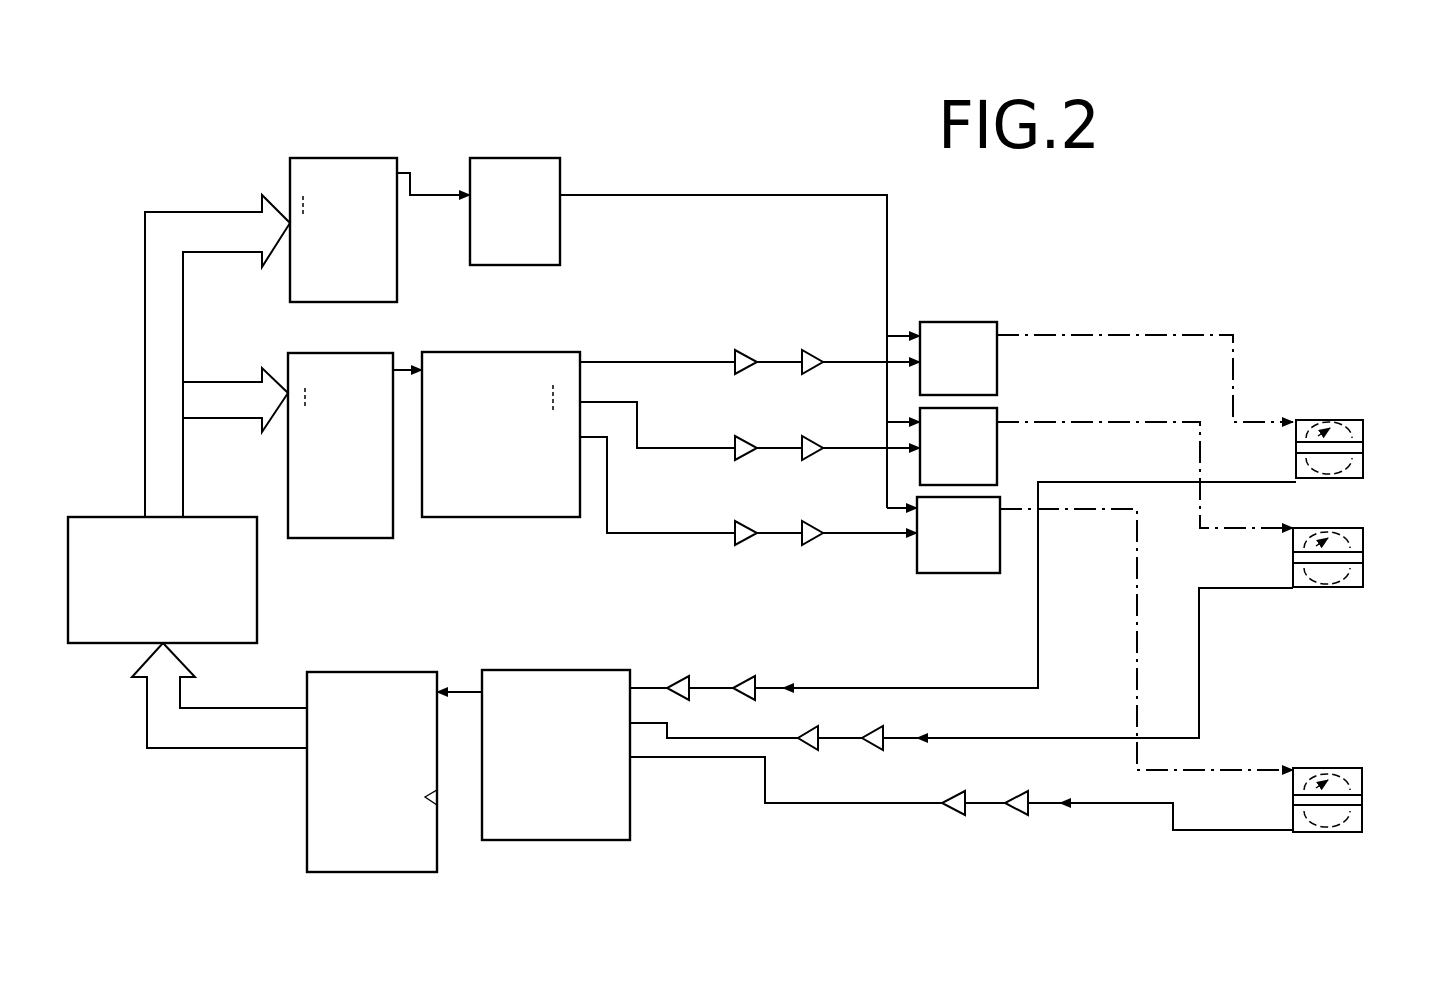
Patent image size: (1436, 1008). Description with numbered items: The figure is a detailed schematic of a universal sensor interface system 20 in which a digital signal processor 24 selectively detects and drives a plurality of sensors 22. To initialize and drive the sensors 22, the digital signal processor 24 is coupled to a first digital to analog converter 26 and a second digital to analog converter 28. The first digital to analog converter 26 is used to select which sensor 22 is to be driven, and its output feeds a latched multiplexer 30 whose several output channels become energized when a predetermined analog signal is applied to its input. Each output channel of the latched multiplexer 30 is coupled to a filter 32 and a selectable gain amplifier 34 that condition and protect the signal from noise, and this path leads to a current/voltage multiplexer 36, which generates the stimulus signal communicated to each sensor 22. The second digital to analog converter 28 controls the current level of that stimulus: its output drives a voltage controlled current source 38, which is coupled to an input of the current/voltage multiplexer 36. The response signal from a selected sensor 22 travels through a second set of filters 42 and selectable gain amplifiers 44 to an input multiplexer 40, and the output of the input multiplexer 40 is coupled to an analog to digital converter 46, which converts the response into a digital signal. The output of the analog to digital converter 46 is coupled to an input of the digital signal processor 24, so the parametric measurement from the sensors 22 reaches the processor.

The universal sensor interface system 20 is at (718, 148).
The sensor 22 is at (1370, 540).
The digital signal processor 24 is at (103, 548).
The first digital to analog converter 26 is at (340, 418).
The second digital to analog converter 28 is at (350, 206).
The latched multiplexer 30 is at (487, 405).
The filter 32 is at (733, 527).
The selectable gain amplifier 34 is at (808, 368).
The current/voltage multiplexer 36 is at (1003, 507).
The voltage controlled current source 38 is at (508, 183).
The input multiplexer 40 is at (575, 772).
The filter 42 is at (762, 683).
The selectable gain amplifier 44 is at (805, 728).
The analog to digital converter 46 is at (388, 794).